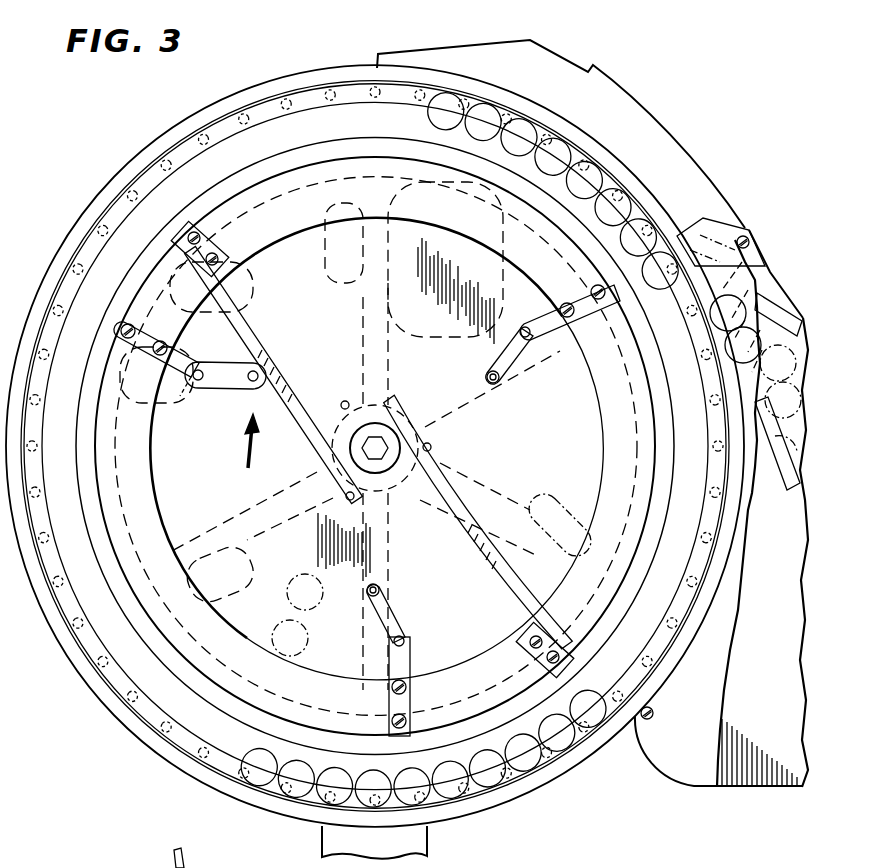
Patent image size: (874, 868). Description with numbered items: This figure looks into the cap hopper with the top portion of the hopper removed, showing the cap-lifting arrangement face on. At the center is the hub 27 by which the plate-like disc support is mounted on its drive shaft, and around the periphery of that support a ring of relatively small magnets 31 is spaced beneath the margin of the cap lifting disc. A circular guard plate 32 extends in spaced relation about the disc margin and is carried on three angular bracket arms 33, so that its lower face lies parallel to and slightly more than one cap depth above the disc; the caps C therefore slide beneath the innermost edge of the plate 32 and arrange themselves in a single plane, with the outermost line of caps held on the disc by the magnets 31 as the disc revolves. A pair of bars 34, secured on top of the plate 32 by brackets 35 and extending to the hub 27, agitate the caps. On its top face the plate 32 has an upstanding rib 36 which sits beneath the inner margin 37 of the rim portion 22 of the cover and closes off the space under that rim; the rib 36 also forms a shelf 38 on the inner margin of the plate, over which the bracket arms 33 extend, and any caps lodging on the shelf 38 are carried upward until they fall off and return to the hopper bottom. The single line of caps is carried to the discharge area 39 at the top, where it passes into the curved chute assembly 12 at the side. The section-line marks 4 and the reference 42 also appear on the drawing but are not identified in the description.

The curved chute assembly 12 is at (787, 236).
The rim portion 22 is at (68, 860).
The hub 27 is at (356, 438).
The magnets 31 is at (165, 163).
The circular guard plate 32 is at (612, 433).
The angular bracket arms 33 is at (188, 385).
The bars 34 is at (275, 360).
The brackets 35 is at (227, 267).
The upstanding rib 36 is at (318, 158).
The inner margin 37 is at (155, 858).
The shelf 38 is at (152, 472).
The discharge area 39 is at (630, 212).
The inner race 42 is at (665, 352).
The section line 4- 4 is at (16, 268).
The caps C is at (520, 120).